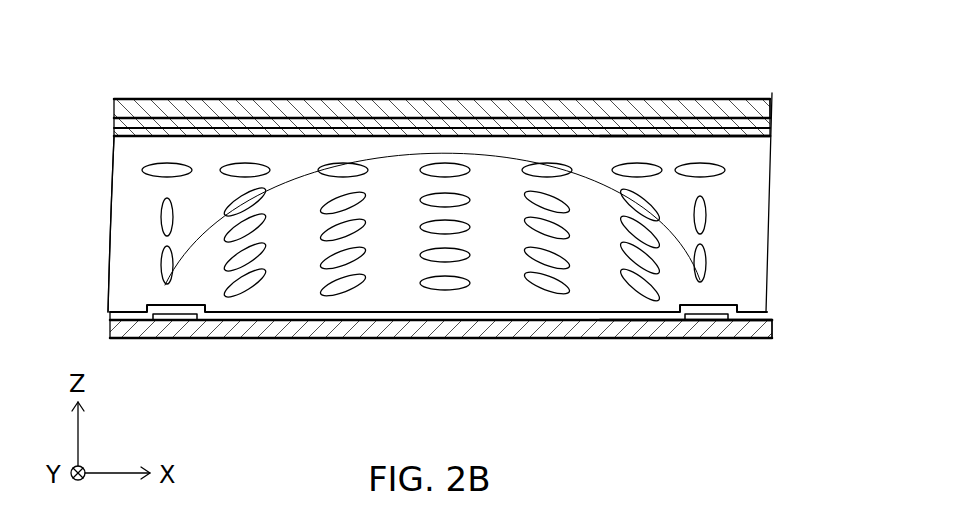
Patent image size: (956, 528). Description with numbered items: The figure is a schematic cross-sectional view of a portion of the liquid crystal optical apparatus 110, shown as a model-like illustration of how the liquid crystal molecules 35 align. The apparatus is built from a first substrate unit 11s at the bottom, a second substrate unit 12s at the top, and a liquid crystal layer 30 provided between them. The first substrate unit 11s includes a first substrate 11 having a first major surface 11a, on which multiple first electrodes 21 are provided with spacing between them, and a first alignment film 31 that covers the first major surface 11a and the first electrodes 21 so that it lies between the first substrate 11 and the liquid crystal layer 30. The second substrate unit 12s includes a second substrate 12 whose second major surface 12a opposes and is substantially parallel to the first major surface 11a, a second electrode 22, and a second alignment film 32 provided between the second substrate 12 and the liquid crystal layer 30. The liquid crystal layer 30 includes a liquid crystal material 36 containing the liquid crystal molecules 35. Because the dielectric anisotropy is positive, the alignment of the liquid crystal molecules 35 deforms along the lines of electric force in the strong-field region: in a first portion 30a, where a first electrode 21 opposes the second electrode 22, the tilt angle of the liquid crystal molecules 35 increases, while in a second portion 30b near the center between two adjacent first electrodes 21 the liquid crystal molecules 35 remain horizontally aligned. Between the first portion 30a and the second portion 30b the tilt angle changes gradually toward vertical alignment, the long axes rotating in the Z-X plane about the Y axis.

The liquid crystal optical apparatus 110 is at (566, 98).
The second substrate 12 is at (117, 107).
The second electrode 22 is at (117, 123).
The second alignment film 32 is at (117, 134).
The second substrate unit 12s is at (773, 119).
The second major surface 12a is at (743, 131).
The liquid crystal material 36 is at (127, 190).
The liquid crystal layer 30 is at (108, 228).
The liquid crystal molecules 35 is at (703, 213).
The first portion 30a is at (147, 264).
The second portion 30b is at (403, 264).
The first alignment film 31 is at (135, 316).
The first electrode 21 is at (173, 319).
The first substrate 11 is at (125, 330).
The first major surface 11a is at (754, 312).
The first substrate unit 11s is at (773, 328).